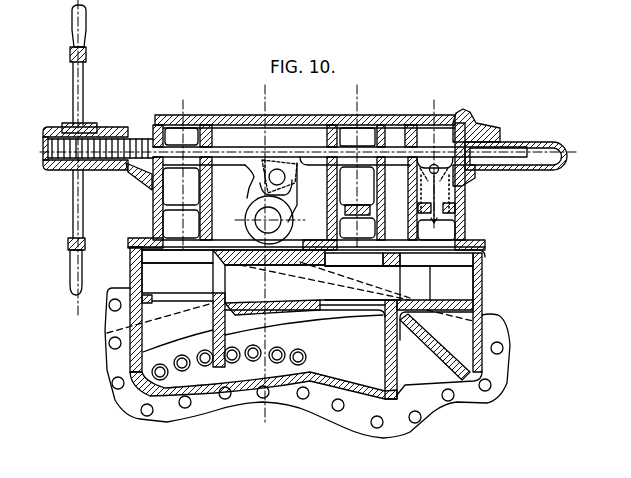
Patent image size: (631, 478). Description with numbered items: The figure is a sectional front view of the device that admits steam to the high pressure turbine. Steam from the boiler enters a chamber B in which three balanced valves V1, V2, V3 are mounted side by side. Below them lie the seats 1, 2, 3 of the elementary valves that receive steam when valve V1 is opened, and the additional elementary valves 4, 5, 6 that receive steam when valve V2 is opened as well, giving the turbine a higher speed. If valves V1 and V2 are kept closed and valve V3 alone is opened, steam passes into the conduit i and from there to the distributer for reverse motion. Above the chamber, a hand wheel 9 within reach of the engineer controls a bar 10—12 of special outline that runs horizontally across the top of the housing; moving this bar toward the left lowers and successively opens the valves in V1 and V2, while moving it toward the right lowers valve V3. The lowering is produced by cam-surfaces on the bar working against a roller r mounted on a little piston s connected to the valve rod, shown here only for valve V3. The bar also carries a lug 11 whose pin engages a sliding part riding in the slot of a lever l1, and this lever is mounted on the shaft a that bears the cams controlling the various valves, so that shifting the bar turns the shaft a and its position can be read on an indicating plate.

The hand wheel / operating handle 9 is at (77, 162).
The bar 10 is at (340, 157).
The lug 11 is at (297, 177).
The bar 12 is at (429, 169).
The lever l1 is at (294, 199).
The shaft a is at (287, 225).
The roller r is at (463, 121).
The little piston s is at (462, 190).
The balanced valve V1 is at (177, 278).
The chamber B is at (349, 284).
The balanced valve V2 is at (362, 283).
The balanced valve V3 is at (444, 283).
The conduit i is at (436, 346).
The valve seat 1 is at (158, 368).
The valve seat 2 is at (182, 359).
The valve seat 3 is at (205, 354).
The elementary valve 4 is at (232, 350).
The elementary valve 5 is at (253, 349).
The elementary valve 6 is at (277, 350).